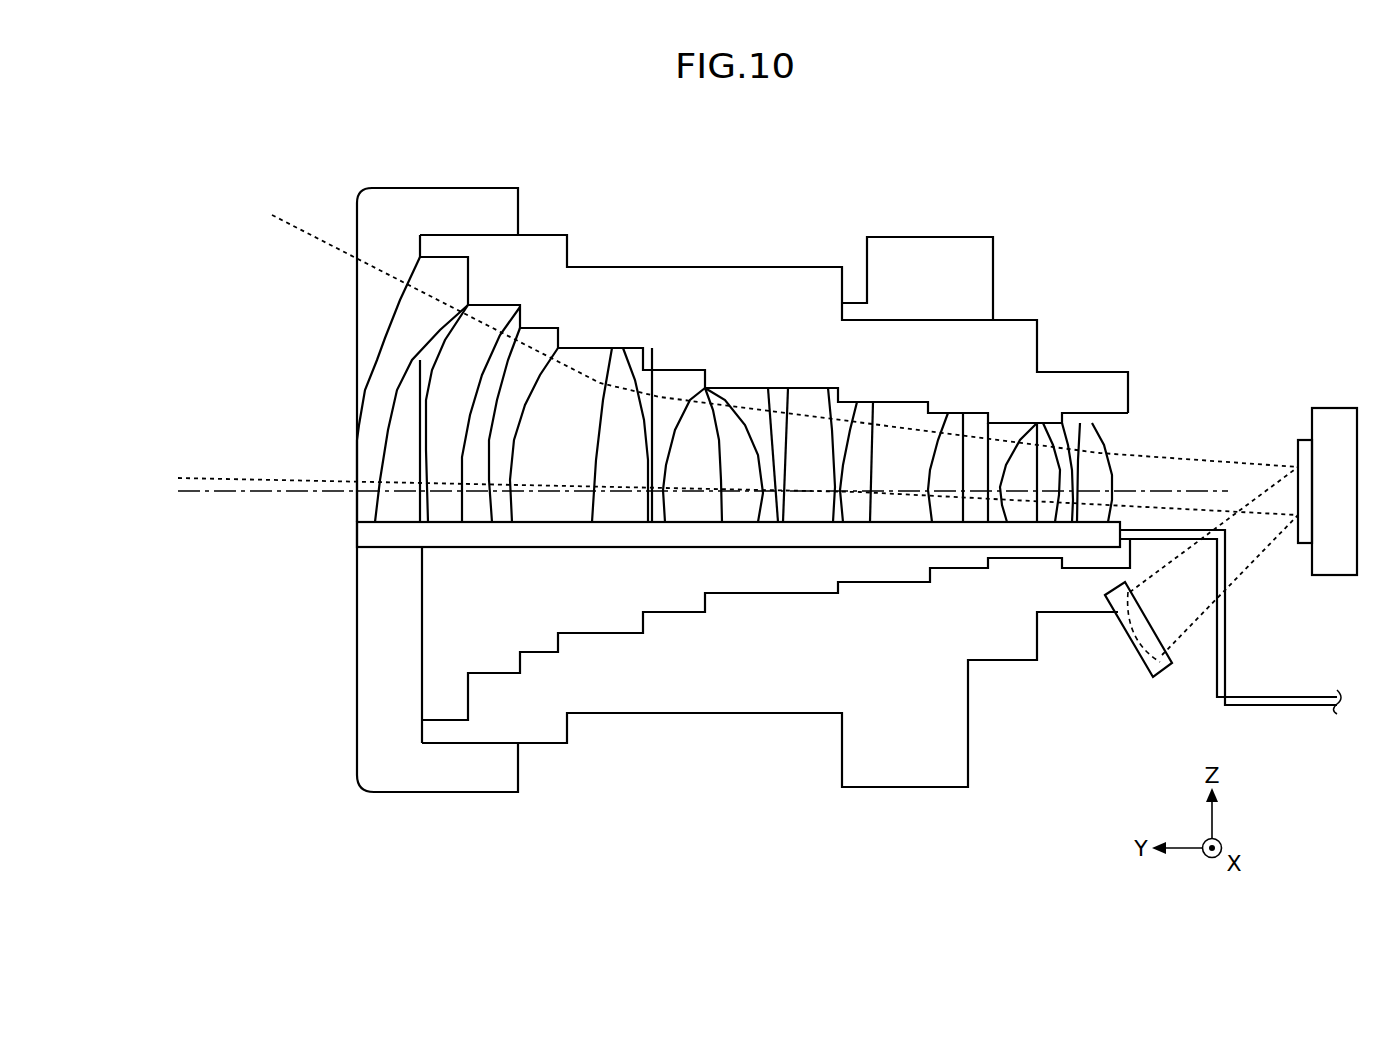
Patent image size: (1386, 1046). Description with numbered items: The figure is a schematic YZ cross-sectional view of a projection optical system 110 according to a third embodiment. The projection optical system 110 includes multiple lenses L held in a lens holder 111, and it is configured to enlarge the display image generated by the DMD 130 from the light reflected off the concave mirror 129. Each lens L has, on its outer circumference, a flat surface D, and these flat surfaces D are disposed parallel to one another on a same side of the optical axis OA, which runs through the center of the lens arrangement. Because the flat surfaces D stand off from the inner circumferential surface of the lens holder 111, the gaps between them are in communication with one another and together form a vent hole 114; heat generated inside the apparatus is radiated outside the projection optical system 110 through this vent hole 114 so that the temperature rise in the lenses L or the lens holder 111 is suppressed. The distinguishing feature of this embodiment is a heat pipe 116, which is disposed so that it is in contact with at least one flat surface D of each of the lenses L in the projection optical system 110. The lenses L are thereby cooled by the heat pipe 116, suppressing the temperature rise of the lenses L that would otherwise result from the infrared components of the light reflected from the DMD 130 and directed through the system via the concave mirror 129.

The projection optical system 110 is at (1106, 209).
The lens holder 111 is at (653, 282).
The vent hole 114 is at (448, 667).
The heat pipe 116 is at (550, 537).
The concave mirror 129 is at (1133, 667).
The DMD 130 is at (1298, 447).
The lens L is at (387, 377).
The flat surface D is at (368, 523).
The optical axis OA is at (684, 491).